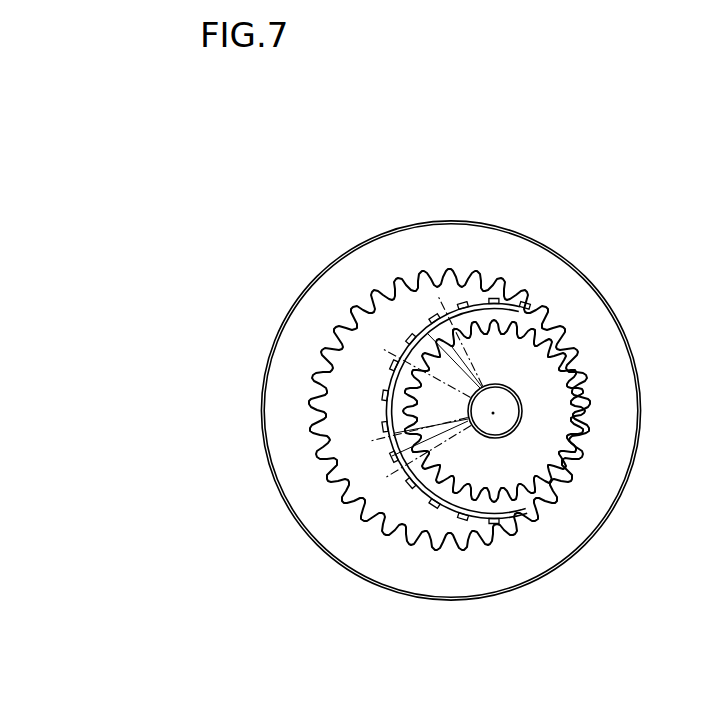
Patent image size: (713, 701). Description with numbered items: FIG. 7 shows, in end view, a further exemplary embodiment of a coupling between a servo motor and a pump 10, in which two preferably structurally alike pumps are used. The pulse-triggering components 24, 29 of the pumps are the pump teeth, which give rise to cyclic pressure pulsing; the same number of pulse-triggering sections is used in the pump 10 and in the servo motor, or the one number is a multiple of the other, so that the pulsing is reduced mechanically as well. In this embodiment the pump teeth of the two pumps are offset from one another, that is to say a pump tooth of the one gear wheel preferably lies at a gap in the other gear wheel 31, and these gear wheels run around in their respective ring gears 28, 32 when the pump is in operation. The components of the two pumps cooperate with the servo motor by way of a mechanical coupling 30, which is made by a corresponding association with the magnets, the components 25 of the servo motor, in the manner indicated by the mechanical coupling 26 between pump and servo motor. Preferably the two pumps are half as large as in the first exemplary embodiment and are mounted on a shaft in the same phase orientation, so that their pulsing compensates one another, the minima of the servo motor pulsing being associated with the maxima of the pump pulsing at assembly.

The pump 10 is at (430, 205).
The pump teeth 24 is at (567, 446).
The magnets 25 is at (383, 382).
The mechanical coupling 26 is at (470, 353).
The ring gear 28 is at (437, 545).
The pump teeth 29 is at (575, 366).
The mechanical coupling 30 is at (387, 453).
The gear wheel 31 is at (533, 363).
The ring gear 32 is at (345, 537).